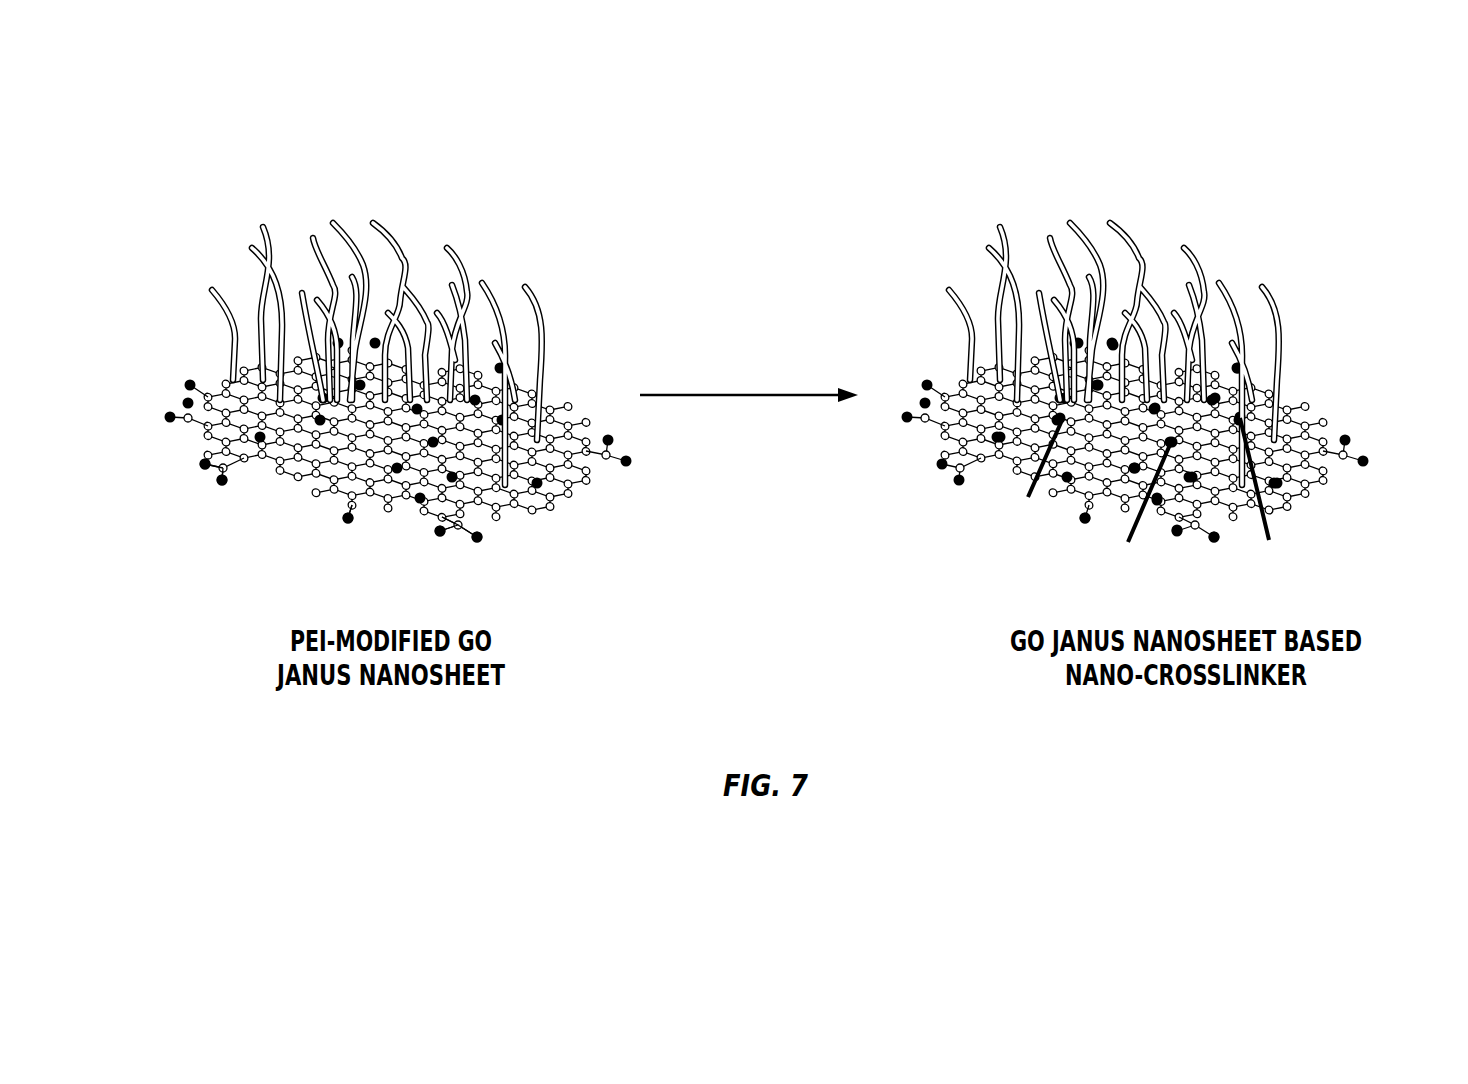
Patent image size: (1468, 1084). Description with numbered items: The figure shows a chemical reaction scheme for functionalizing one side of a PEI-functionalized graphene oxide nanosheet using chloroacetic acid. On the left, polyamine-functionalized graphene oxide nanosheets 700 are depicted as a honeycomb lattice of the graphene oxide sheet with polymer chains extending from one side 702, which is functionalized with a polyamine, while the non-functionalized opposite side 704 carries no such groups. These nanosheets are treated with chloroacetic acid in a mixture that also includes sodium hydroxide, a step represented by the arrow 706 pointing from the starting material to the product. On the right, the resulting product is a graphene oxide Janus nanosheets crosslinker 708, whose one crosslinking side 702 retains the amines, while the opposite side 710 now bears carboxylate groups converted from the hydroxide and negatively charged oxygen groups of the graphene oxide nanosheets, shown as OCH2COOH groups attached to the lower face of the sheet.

The polyamine-functionalized graphene oxide nanosheets 700 is at (203, 242).
The polyamine-functionalized side 702 is at (169, 362).
The non-functionalized opposite side 704 is at (239, 502).
The arrow 706 is at (658, 394).
The graphene oxide Janus nanosheets crosslinker 708 is at (938, 242).
The carboxylate-bearing opposite side 710 is at (1363, 505).